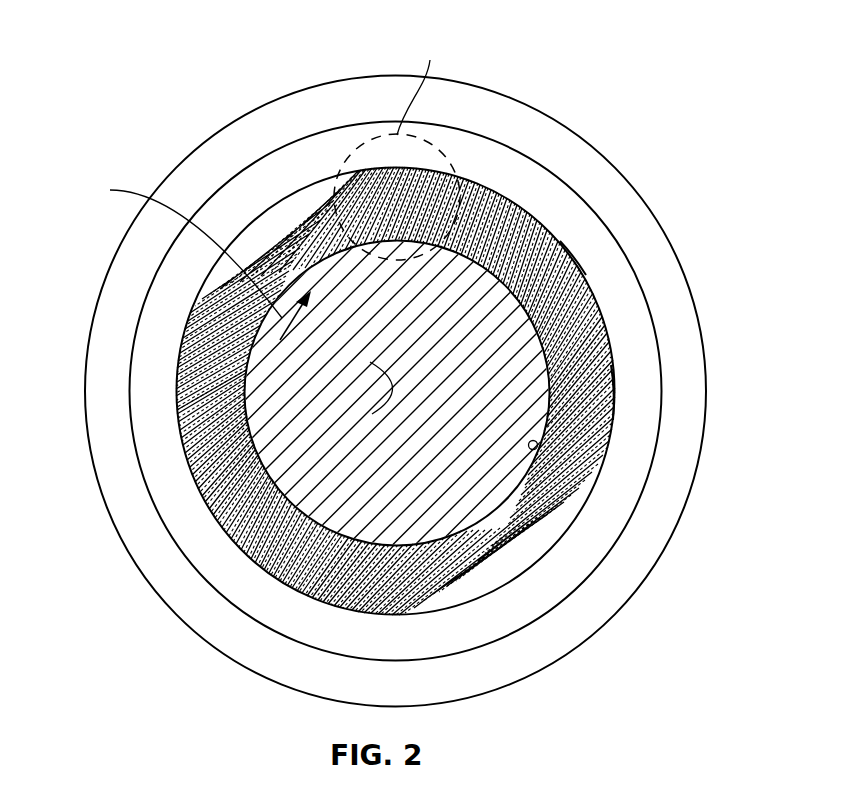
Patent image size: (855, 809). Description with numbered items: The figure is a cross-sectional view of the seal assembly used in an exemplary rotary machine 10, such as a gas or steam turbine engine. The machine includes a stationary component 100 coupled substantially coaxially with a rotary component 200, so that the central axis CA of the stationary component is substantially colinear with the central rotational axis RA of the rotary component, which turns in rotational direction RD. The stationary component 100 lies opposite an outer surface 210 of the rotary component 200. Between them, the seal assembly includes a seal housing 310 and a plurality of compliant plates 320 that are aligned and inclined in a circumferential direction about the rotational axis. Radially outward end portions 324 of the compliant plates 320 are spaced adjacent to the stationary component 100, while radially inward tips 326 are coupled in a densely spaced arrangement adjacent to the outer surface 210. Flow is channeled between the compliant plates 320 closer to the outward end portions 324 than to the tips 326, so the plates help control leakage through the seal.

The rotary machine 10 is at (146, 40).
The stationary component 100 is at (662, 268).
The rotary component 200 is at (490, 357).
The outer surface 210 is at (538, 446).
The seal housing 310 is at (637, 318).
The compliant plates 320 is at (610, 429).
The radially outward end portions 324 is at (573, 250).
The radially inward tips 326 is at (617, 392).